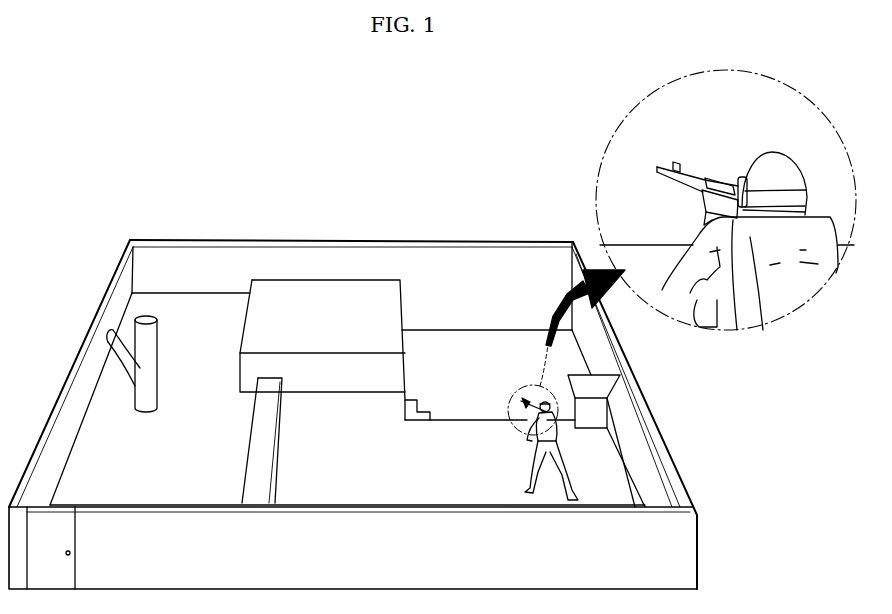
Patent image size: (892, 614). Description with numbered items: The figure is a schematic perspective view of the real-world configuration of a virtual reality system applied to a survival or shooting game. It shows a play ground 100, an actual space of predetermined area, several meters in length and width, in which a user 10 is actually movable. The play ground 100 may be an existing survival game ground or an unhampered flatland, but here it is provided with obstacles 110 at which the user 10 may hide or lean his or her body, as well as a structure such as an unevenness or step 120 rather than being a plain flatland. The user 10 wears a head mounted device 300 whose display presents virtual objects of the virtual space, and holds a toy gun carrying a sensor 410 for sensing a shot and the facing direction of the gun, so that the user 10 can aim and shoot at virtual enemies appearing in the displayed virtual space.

The user 10 is at (543, 442).
The play ground 100 is at (358, 458).
The obstacle 110 is at (247, 345).
The step 120 is at (417, 400).
The head mounted device 300 is at (740, 177).
The sensor 410 is at (688, 183).